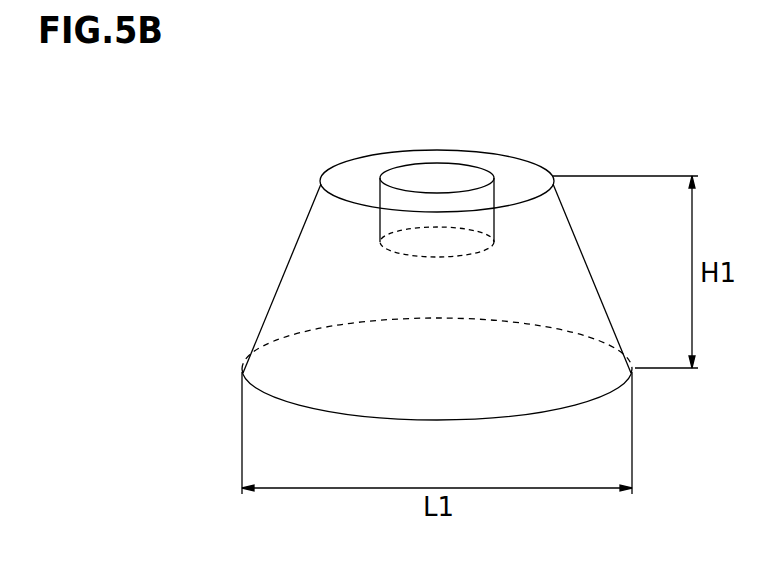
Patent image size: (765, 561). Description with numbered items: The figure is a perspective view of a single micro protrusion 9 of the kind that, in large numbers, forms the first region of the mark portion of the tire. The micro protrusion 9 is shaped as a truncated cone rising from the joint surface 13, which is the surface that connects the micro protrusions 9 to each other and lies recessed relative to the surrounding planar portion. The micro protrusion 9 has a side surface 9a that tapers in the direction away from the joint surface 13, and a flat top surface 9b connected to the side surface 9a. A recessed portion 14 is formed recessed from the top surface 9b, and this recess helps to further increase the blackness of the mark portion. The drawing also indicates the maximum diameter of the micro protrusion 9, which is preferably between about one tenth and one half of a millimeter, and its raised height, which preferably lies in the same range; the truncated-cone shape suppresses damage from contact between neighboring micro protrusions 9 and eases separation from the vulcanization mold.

The micro protrusion 9 is at (409, 239).
The side surface 9a is at (298, 213).
The top surface 9b is at (348, 175).
The joint surface 13 is at (198, 377).
The recessed portion 14 is at (435, 178).